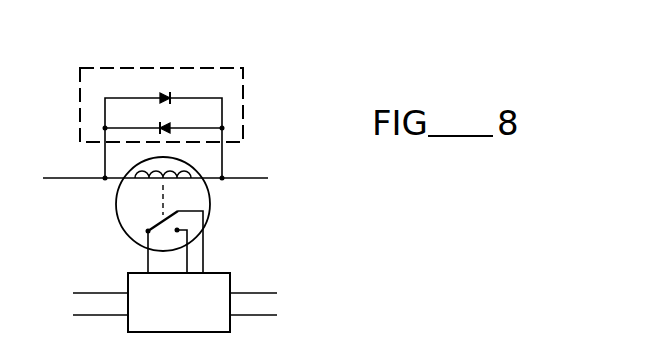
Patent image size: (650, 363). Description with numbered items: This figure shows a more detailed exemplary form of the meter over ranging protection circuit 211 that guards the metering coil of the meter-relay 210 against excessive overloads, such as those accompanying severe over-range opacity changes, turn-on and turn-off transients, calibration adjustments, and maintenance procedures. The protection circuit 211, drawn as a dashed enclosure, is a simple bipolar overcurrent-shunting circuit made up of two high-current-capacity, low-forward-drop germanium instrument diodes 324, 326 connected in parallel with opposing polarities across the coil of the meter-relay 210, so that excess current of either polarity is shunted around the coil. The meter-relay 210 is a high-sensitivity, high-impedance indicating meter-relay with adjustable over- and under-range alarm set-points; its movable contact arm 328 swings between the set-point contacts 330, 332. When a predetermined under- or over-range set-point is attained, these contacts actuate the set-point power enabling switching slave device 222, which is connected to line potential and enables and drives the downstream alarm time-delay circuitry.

The meter over ranging protection circuit 211 is at (243, 88).
The instrument diode 324 is at (163, 90).
The instrument diode 326 is at (168, 124).
The meter-relay 210 is at (117, 205).
The meter-relay contact arm 328 is at (163, 220).
The meter-relay contact 330 is at (180, 210).
The meter-relay contact 332 is at (181, 227).
The power enabling switching slave device 222 is at (232, 281).